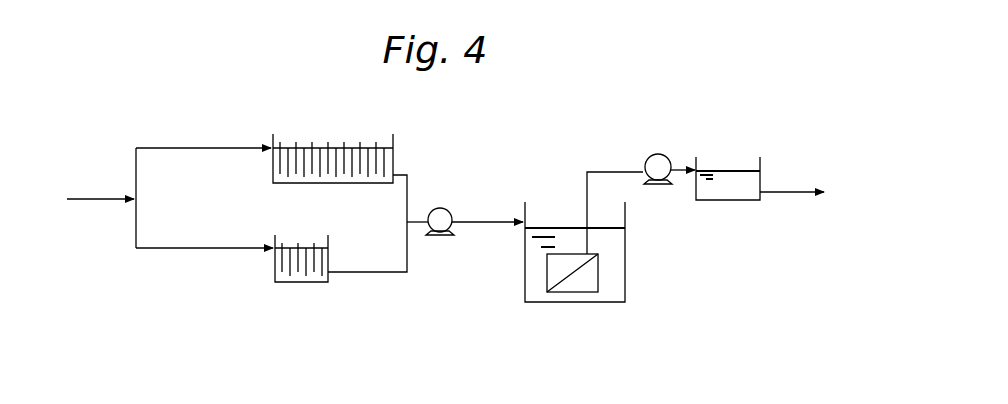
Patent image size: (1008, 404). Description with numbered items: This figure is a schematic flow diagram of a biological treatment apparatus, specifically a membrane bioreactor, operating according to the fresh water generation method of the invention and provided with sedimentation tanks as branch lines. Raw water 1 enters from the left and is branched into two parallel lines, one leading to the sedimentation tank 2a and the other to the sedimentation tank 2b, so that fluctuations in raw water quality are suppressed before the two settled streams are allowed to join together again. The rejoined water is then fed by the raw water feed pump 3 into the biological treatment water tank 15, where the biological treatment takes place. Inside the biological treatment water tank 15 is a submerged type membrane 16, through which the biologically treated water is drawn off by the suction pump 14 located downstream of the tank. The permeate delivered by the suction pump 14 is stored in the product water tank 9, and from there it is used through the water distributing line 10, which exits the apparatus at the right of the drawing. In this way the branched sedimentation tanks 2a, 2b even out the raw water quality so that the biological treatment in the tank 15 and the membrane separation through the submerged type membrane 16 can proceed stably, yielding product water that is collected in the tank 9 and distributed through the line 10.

The raw water 1 is at (107, 200).
The sedimentation tank 2a is at (333, 184).
The sedimentation tank 2b is at (270, 267).
The raw water feed pump 3 is at (433, 235).
The biological treatment water tank 15 is at (612, 302).
The submerged type membrane 16 is at (580, 302).
The suction pump 14 is at (653, 185).
The product water tank 9 is at (713, 200).
The water distributing line 10 is at (793, 192).